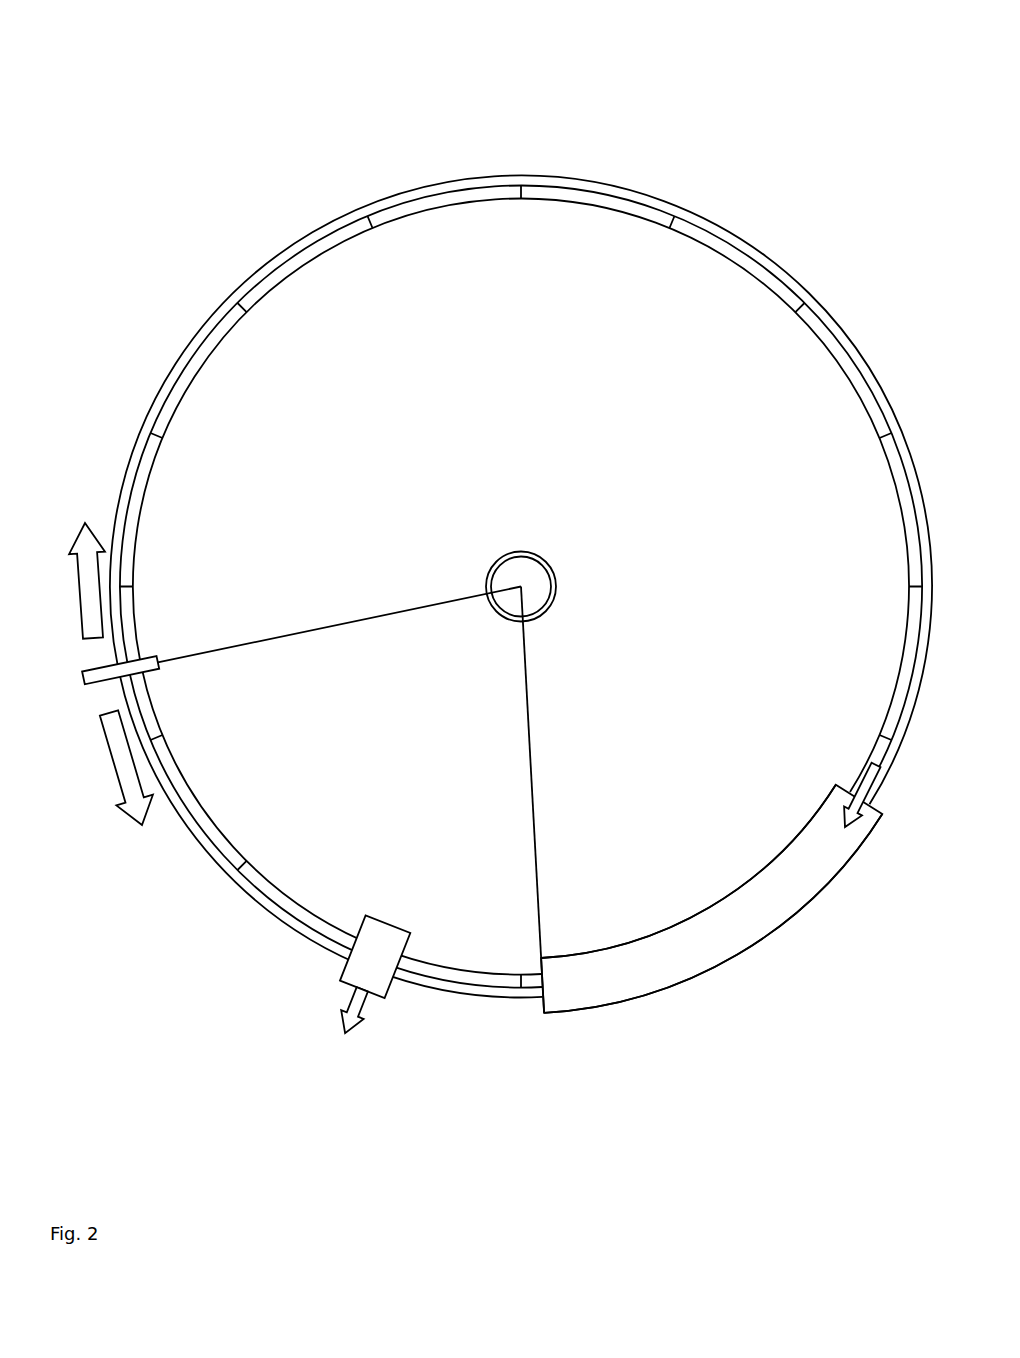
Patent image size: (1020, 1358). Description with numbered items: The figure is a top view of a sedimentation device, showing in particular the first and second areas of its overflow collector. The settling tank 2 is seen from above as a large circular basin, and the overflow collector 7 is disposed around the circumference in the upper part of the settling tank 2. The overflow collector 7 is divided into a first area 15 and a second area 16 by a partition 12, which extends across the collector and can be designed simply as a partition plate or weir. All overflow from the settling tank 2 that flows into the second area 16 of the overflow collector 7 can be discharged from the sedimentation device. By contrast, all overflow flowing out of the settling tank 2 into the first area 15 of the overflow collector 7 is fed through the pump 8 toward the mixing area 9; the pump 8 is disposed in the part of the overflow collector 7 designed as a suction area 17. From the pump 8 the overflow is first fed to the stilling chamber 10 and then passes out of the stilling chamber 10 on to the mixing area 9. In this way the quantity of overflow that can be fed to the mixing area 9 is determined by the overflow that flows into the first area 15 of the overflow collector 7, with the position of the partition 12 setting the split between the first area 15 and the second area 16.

The settling tank 2 is at (759, 222).
The overflow collector 7 is at (167, 388).
The first area of the overflow collector 15 is at (390, 188).
The partition 12 is at (100, 675).
The second area of the overflow collector 16 is at (235, 925).
The mixing area 9 is at (613, 970).
The stilling chamber 10 is at (735, 925).
The pump 8 is at (797, 893).
The suction area 17 is at (837, 850).